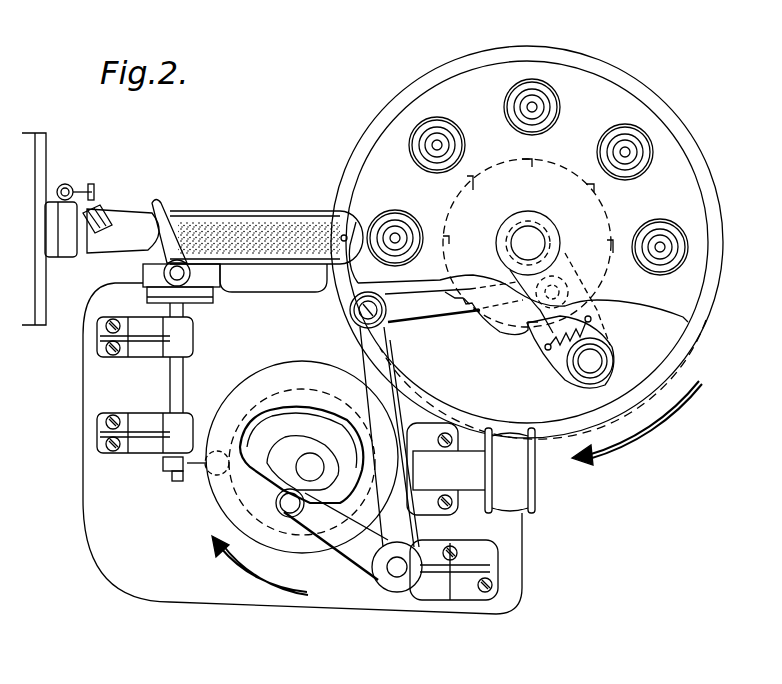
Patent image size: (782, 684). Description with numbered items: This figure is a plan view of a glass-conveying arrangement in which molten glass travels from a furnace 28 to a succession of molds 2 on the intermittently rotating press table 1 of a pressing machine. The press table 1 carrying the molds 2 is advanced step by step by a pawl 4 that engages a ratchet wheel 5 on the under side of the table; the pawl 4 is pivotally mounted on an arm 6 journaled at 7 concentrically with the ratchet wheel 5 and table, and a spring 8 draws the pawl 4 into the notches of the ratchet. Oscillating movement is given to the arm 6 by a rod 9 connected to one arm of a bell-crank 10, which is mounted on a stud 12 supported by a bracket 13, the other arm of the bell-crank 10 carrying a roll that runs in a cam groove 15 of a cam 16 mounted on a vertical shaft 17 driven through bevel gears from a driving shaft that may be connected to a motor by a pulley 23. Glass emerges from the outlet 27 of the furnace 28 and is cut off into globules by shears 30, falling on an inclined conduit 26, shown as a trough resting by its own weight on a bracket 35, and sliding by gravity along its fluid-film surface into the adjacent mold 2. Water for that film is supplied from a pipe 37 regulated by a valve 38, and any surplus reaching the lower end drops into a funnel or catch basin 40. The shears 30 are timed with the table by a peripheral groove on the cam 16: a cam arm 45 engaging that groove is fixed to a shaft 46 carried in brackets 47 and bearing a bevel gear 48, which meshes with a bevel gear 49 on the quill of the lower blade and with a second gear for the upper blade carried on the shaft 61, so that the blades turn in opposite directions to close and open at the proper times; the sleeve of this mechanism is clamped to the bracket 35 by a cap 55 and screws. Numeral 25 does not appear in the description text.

The press table 1 is at (484, 78).
The molds 2 is at (412, 130).
The pawl 4 is at (560, 378).
The ratchet wheel 5 is at (500, 327).
The arm 6 is at (592, 329).
The journal 7 is at (538, 243).
The spring 8 is at (557, 347).
The rod 9 is at (440, 310).
The bell-crank 10 is at (367, 565).
The stud 12 is at (398, 578).
The bracket 13 is at (462, 592).
The cam groove 15 is at (262, 482).
The cam 16 is at (327, 368).
The vertical shaft 17 is at (305, 455).
The pulley 23 is at (513, 503).
The tube 25 is at (250, 222).
The conduit 26 is at (282, 213).
The outlet 27 is at (127, 223).
The furnace 28 is at (47, 158).
The shears 30 is at (163, 210).
The bracket 35 is at (214, 270).
The pipe 37 is at (67, 186).
The valve 38 is at (92, 204).
The funnel or catch basin 40 is at (360, 222).
The cam arm 45 is at (160, 468).
The shaft 46 is at (173, 482).
The brackets 47 is at (122, 357).
The bevel gear 48 is at (200, 315).
The bevel gear 49 is at (210, 303).
The cap 55 is at (147, 287).
The shaft 61 is at (162, 275).